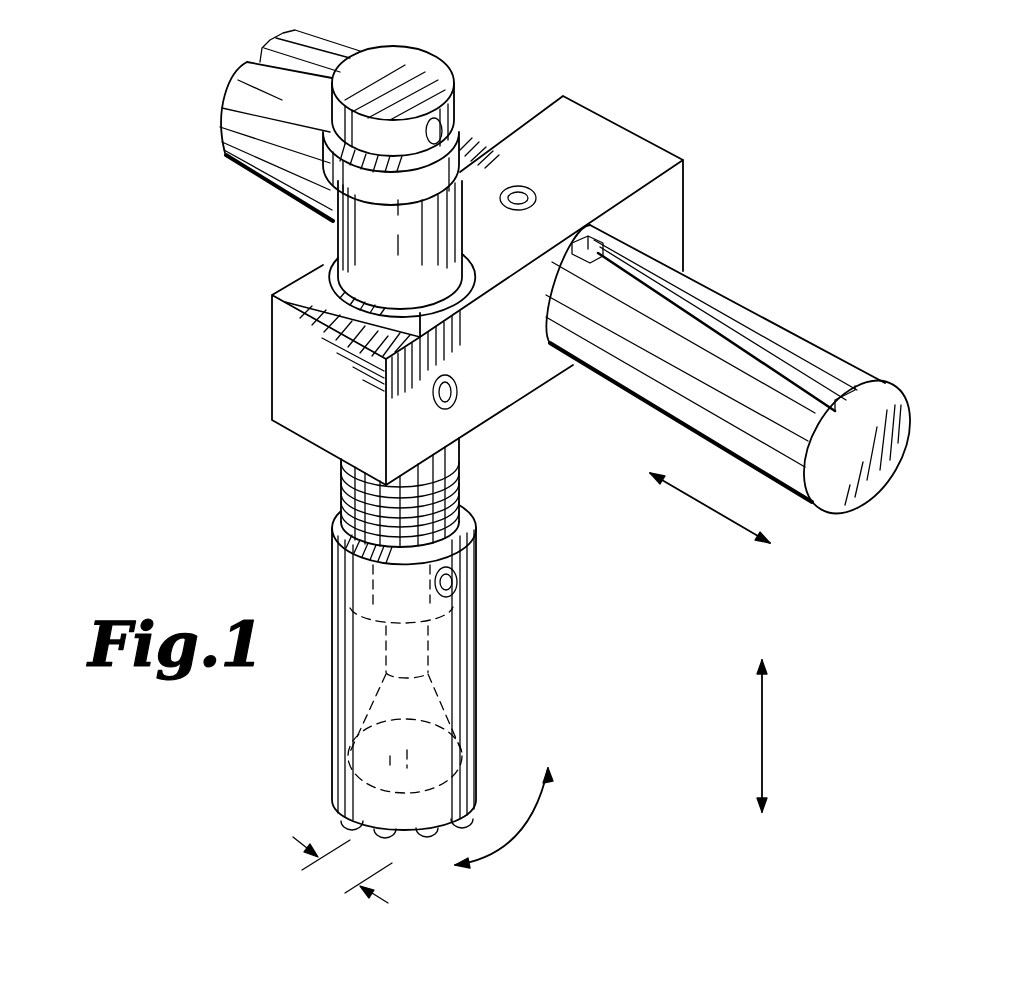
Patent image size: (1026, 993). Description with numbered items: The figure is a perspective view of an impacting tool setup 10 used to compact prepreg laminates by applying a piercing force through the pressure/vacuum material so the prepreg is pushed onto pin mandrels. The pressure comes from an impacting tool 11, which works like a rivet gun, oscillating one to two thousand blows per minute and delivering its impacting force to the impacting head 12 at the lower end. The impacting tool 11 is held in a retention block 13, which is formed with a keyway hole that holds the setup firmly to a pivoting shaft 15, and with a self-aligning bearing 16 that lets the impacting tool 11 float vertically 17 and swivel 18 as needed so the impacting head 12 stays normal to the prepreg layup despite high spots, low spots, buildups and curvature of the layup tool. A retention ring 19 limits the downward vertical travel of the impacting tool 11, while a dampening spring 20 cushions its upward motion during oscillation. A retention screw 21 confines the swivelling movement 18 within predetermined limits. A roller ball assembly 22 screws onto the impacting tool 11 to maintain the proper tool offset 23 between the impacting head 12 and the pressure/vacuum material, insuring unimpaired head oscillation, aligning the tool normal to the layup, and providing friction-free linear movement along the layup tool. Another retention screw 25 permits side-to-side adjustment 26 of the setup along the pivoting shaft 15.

The impacting tool setup 10 is at (606, 104).
The impacting tool 11 is at (355, 238).
The impacting head 12 is at (347, 732).
The retention block 13 is at (318, 381).
The pivoting shaft 15 is at (840, 371).
The self-aligning bearing 16 is at (423, 343).
The vertical float movement 17 is at (768, 741).
The swivel movement 18 is at (537, 835).
The retention ring 19 is at (470, 138).
The dampening spring 20 is at (342, 490).
The retention screw 21 is at (457, 394).
The roller ball assembly 22 is at (487, 625).
The tool offset 23 is at (341, 863).
The retention screw 25 is at (537, 193).
The sliding movement arrow 26 is at (712, 512).